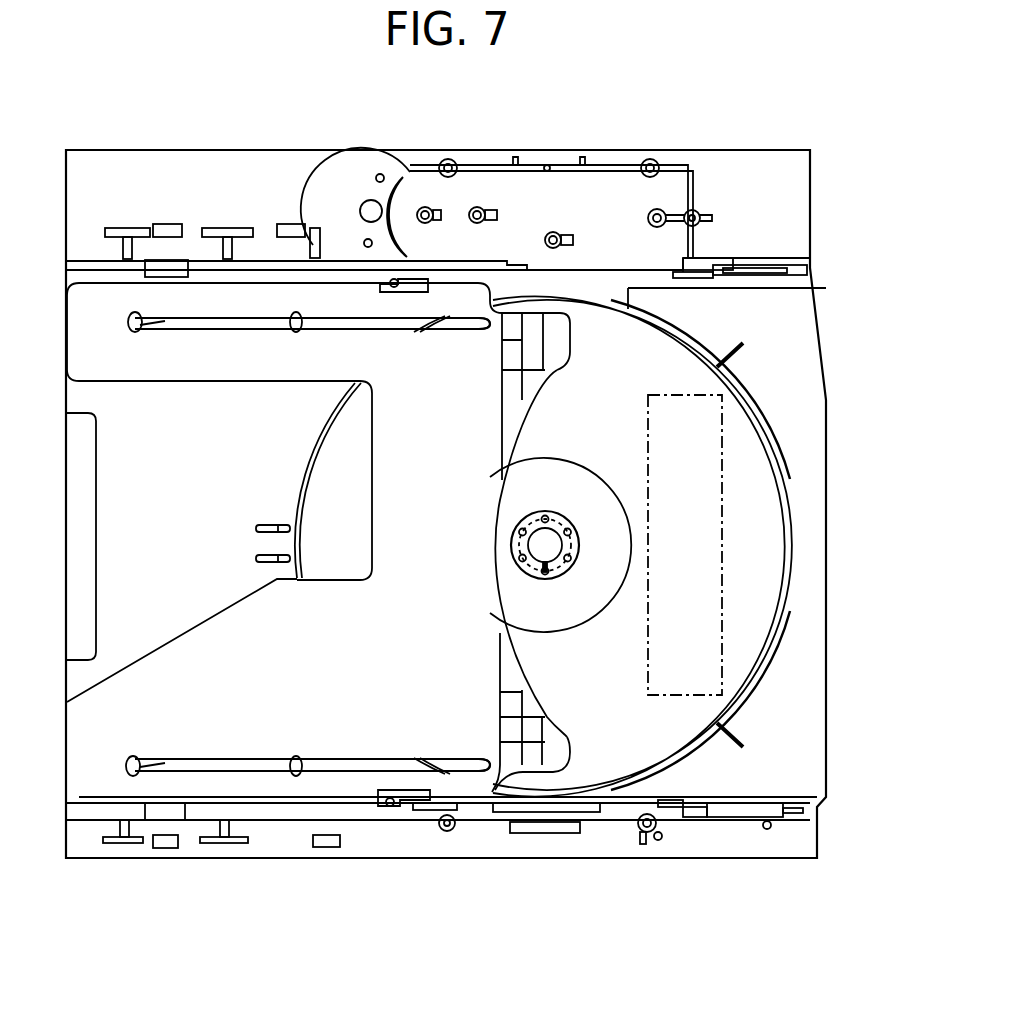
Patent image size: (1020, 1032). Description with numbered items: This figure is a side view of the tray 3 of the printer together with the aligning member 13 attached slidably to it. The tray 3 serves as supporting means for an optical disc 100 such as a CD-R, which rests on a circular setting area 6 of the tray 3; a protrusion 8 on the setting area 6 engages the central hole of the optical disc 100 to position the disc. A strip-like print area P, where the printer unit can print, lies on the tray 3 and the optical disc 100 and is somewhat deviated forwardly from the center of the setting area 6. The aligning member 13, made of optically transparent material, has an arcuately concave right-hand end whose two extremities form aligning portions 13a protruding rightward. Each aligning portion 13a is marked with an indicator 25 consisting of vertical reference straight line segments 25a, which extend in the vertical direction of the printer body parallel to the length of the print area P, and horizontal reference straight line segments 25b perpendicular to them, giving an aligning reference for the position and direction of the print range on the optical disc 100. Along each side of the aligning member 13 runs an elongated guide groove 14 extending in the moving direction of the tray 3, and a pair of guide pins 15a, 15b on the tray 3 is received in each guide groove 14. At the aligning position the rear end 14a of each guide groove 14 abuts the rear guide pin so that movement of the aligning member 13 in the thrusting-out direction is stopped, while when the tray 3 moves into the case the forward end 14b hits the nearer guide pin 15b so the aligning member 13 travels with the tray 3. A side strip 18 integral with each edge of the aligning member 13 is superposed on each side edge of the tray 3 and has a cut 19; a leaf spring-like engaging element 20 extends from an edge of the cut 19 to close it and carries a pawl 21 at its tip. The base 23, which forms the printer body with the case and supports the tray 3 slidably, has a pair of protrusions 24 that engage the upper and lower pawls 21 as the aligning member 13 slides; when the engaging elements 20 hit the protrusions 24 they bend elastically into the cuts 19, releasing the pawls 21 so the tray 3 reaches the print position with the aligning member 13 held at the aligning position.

The tray 3 is at (803, 717).
The setting area 6 is at (757, 410).
The protrusion 8 is at (550, 520).
The aligning member 13 is at (387, 516).
The aligning portion 13a is at (553, 360).
The guide groove 14 is at (367, 327).
The rear end of guide groove 14a is at (145, 327).
The forward end of guide groove 14b is at (487, 330).
The guide pin 15a is at (135, 332).
The guide pin 15b is at (297, 332).
The side strip 18 is at (203, 280).
The cut 19 is at (378, 278).
The engaging element 20 is at (413, 280).
The pawl 21 is at (392, 278).
The base 23 is at (797, 220).
The protrusion 24 is at (757, 277).
The indicator 25 is at (490, 417).
The vertical reference straight line segment 25a is at (500, 440).
The horizontal reference straight line segment 25b is at (553, 357).
The optical disc 100 is at (777, 553).
The print area P is at (648, 440).